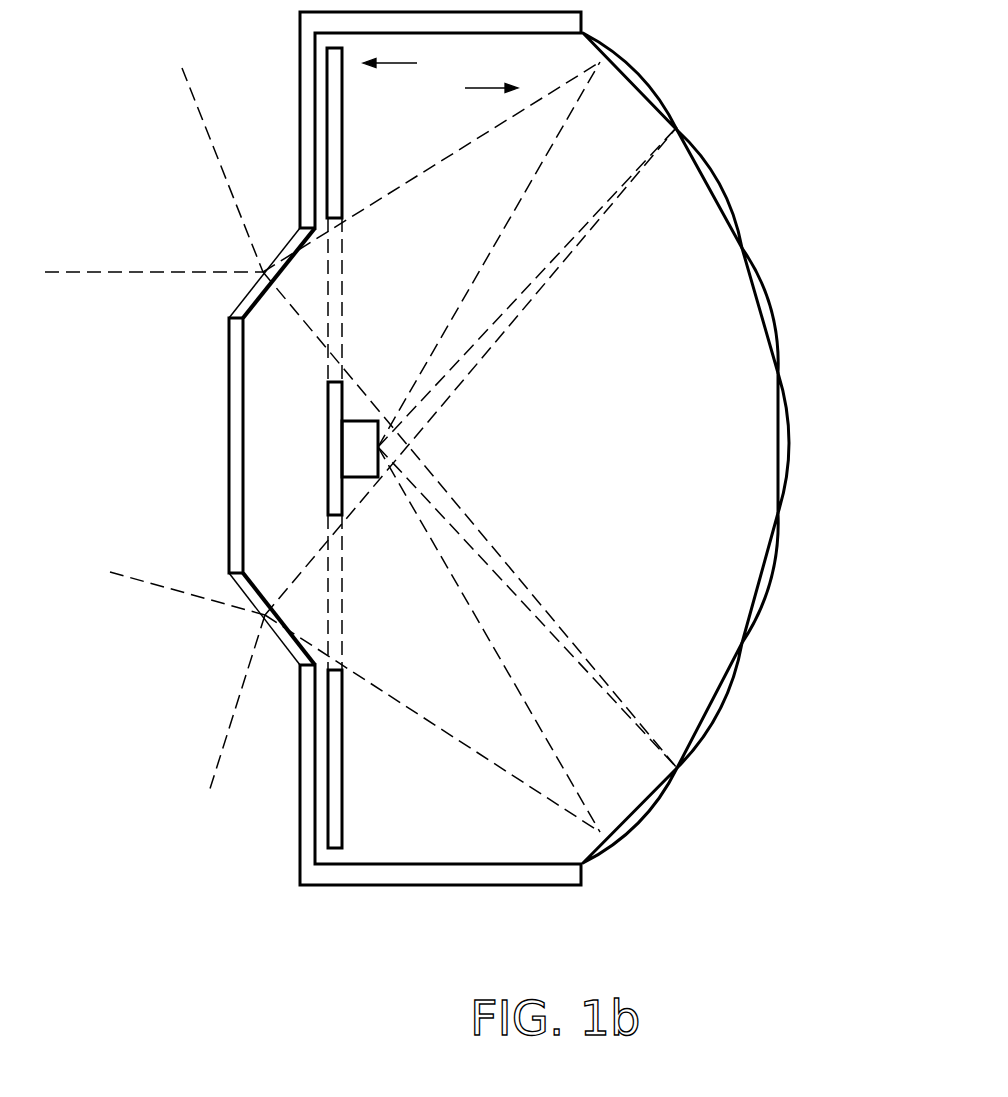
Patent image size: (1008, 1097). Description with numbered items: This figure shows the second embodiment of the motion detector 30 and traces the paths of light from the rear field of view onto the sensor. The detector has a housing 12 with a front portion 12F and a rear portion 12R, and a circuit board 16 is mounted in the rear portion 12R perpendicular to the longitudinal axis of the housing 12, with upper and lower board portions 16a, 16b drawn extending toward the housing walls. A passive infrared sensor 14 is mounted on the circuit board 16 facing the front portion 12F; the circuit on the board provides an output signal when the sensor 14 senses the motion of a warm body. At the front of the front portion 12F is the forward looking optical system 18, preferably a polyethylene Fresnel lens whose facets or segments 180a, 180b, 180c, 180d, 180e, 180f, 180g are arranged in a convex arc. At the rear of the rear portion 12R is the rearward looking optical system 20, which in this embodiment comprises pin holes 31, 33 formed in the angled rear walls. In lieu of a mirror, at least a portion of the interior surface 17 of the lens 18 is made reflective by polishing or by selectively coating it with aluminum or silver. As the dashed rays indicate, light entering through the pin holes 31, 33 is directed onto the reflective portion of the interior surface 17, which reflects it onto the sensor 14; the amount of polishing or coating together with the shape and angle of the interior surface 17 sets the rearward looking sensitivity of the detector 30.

The housing 12 is at (470, 886).
The rear portion 12R is at (415, 67).
The front portion 12F is at (469, 92).
The passive infrared sensor 14 is at (363, 427).
The circuit board 16 is at (342, 163).
The upper shaft portion 16a is at (342, 333).
The lower shaft portion 16b is at (337, 570).
The interior surface 17 is at (668, 388).
The forward looking optical system 18 is at (735, 443).
The rearward looking optical system 20 is at (238, 253).
The detector 30 is at (410, 912).
The pin hole 31 is at (263, 277).
The pin hole 33 is at (263, 617).
The facet or segment 180a is at (642, 87).
The facet or segment 180b is at (710, 177).
The facet or segment 180c is at (770, 315).
The facet or segment 180d is at (783, 465).
The facet or segment 180e is at (770, 560).
The facet or segment 180f is at (723, 708).
The facet or segment 180g is at (638, 822).